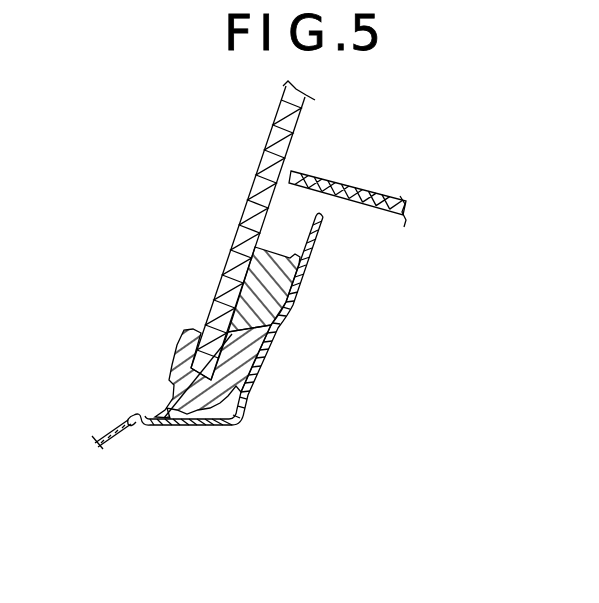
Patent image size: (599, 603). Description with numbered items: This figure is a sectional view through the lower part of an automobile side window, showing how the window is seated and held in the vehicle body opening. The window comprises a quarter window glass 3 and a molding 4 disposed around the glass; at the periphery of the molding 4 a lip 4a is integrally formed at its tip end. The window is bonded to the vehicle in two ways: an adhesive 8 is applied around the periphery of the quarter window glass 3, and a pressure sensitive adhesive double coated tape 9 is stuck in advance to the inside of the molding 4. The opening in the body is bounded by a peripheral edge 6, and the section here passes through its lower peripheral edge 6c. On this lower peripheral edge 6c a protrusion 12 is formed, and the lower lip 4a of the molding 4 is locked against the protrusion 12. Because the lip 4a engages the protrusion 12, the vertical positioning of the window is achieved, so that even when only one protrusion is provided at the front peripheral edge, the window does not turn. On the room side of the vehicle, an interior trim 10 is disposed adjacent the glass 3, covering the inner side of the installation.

The quarter window glass 3 is at (265, 160).
The interior trim 10 is at (387, 203).
The adhesive 8 is at (295, 262).
The molding 4 is at (183, 344).
The lip 4a is at (163, 425).
The pressure sensitive adhesive double coated tape 9 is at (253, 374).
The protrusion 12 is at (138, 416).
The peripheral edge 6 is at (106, 431).
The lower peripheral edge 6c is at (119, 432).